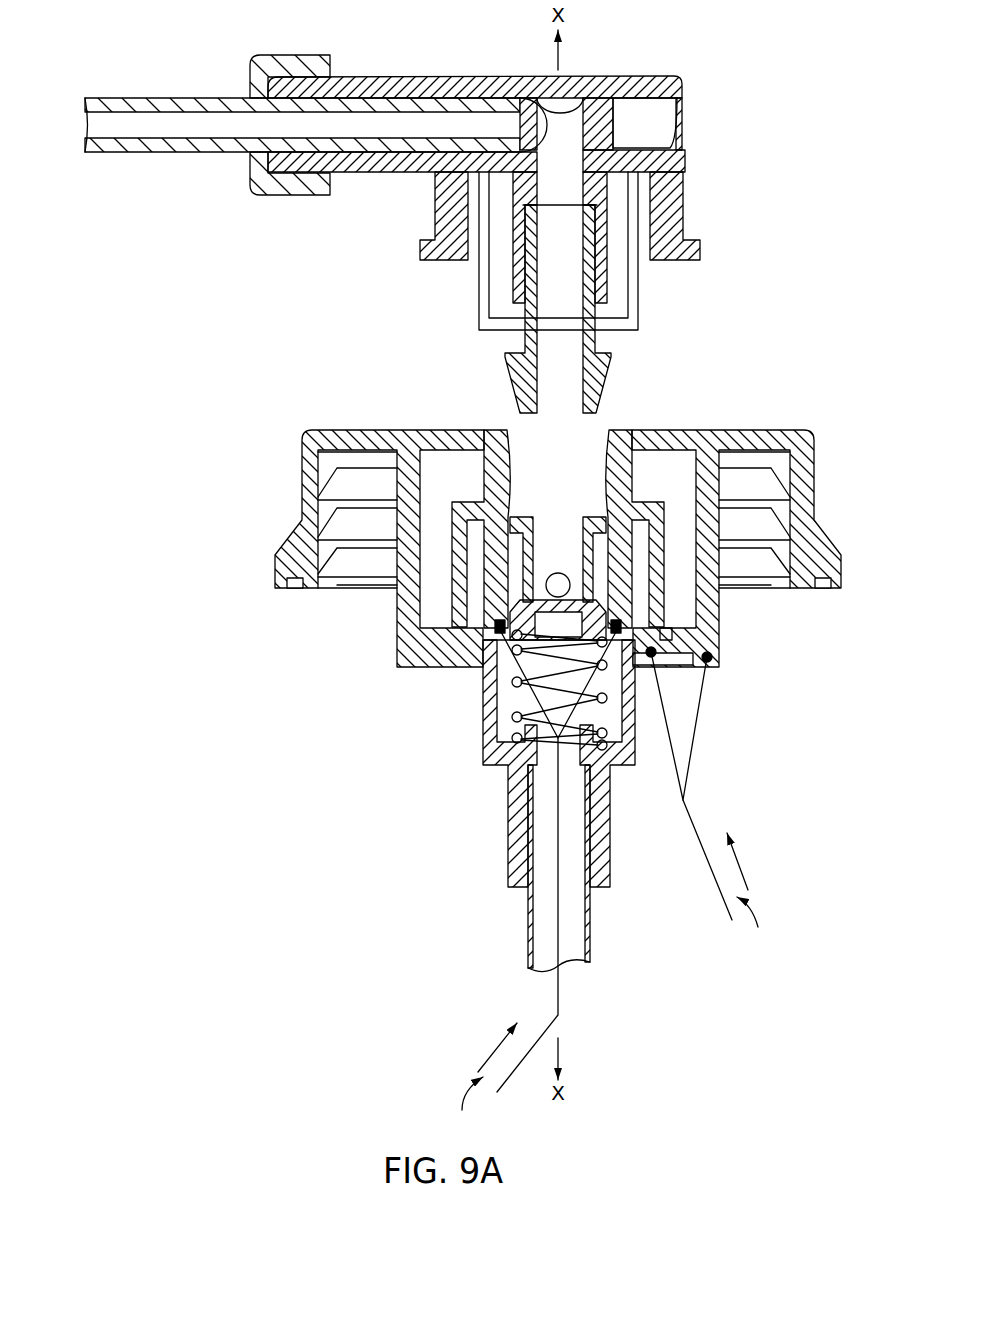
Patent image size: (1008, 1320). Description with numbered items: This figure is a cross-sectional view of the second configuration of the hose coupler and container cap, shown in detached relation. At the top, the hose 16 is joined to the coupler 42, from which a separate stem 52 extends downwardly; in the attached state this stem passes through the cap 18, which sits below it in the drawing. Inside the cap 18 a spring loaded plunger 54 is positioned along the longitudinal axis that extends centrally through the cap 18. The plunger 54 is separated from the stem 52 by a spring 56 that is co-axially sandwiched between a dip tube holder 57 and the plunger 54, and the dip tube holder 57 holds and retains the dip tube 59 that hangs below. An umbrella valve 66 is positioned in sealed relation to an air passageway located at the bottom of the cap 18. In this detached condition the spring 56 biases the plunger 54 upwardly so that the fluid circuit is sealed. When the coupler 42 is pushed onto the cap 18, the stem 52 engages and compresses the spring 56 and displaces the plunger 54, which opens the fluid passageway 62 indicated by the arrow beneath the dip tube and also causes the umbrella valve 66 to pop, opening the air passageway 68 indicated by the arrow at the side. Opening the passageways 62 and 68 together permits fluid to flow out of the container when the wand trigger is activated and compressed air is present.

The hose 16 is at (170, 150).
The coupler 42 is at (677, 212).
The stem 52 is at (613, 385).
The cap 18 is at (812, 452).
The plunger 54 is at (497, 628).
The spring 56 is at (612, 692).
The dip tube holder 57 is at (605, 845).
The dip tube 59 is at (587, 945).
The fluid passageway 62 is at (503, 939).
The umbrella valve 66 is at (712, 660).
The air passageway 68 is at (711, 806).